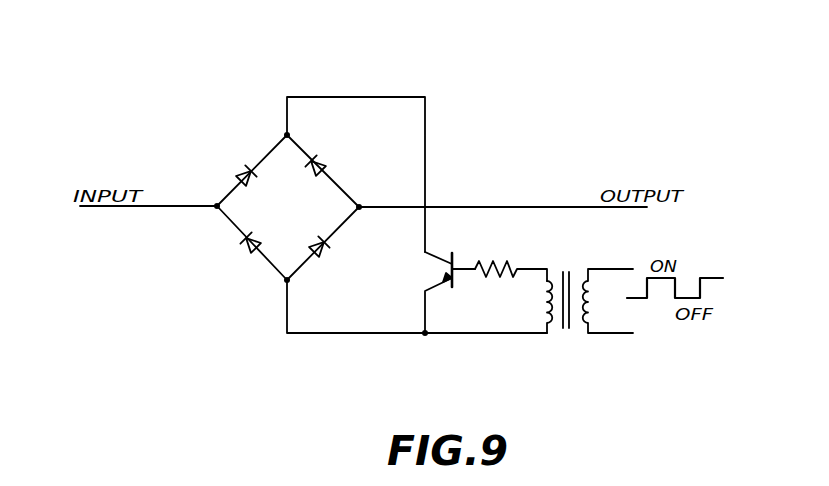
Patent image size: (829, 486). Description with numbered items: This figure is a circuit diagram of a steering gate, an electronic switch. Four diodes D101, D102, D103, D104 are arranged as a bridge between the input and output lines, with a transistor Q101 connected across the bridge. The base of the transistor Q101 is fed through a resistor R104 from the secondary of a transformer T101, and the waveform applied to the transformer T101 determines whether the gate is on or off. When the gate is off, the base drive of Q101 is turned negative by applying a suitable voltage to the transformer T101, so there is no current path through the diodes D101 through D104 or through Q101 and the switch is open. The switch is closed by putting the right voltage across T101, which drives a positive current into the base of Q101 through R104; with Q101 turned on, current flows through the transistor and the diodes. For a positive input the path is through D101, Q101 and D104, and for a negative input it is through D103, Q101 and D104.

The diode D101 is at (241, 168).
The diode D102 is at (328, 162).
The diode D103 is at (247, 251).
The diode D104 is at (326, 255).
The transistor Q101 is at (446, 276).
The resistor R104 is at (490, 263).
The transformer T101 is at (588, 260).